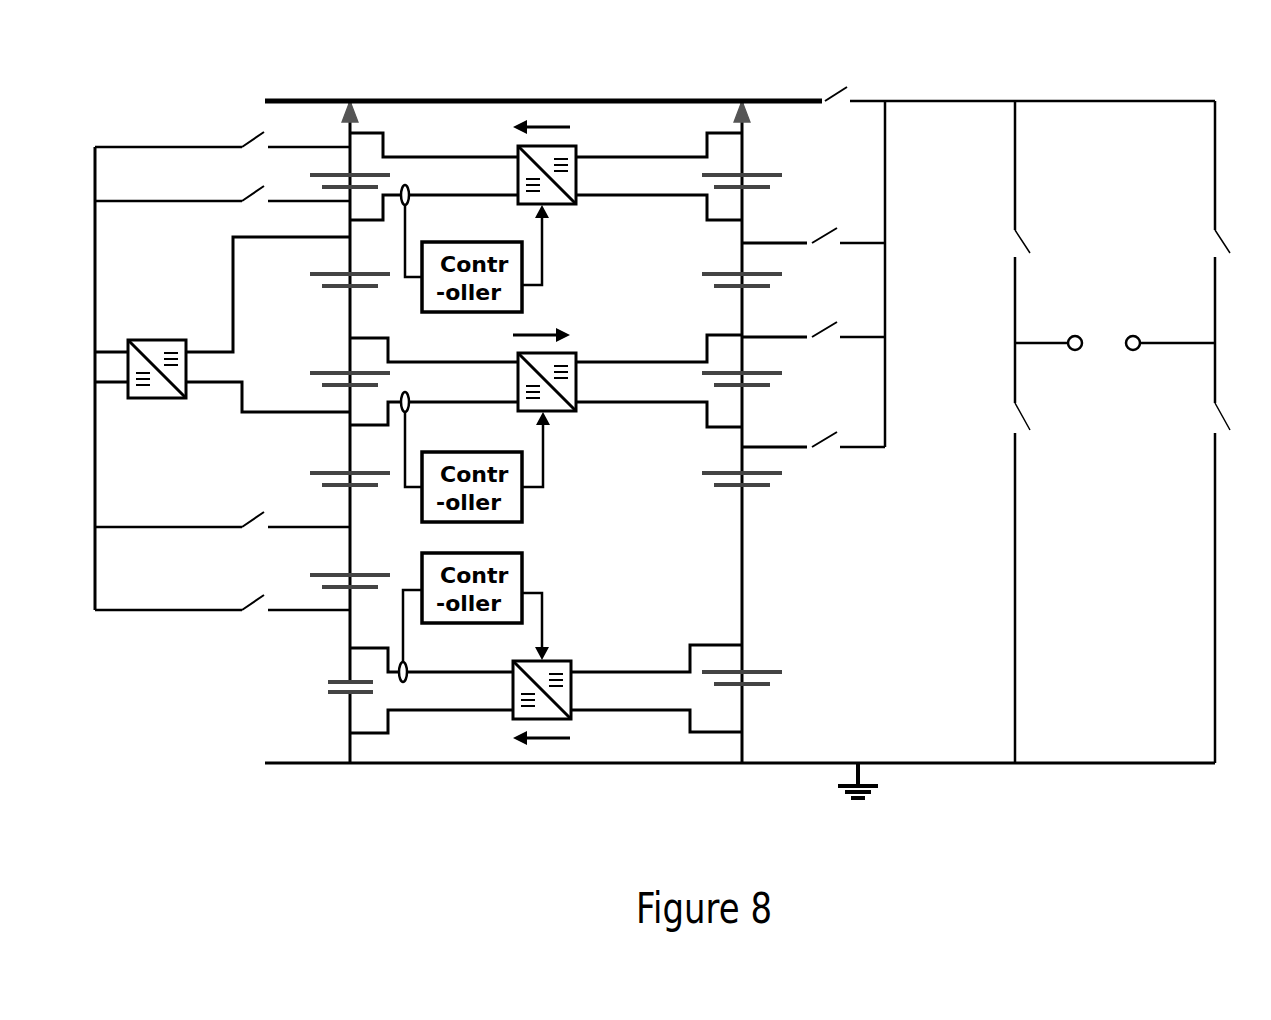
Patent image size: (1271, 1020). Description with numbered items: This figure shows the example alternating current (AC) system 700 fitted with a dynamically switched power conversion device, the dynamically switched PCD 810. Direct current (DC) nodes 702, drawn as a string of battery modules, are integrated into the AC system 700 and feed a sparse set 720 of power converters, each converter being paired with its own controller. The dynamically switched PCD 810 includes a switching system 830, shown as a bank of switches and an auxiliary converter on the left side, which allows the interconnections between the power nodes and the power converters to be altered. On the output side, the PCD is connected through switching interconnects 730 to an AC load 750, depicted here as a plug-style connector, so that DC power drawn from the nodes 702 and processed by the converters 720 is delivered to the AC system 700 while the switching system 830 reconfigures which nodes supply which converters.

The alternating current (AC) system 700 is at (147, 60).
The direct current (DC) nodes 702 is at (297, 156).
The sparse set of power converters 720 is at (502, 146).
The switching interconnects 730 is at (810, 92).
The AC load 750 is at (1115, 328).
The dynamically switched PCD 810 is at (432, 86).
The switching system 830 is at (110, 136).